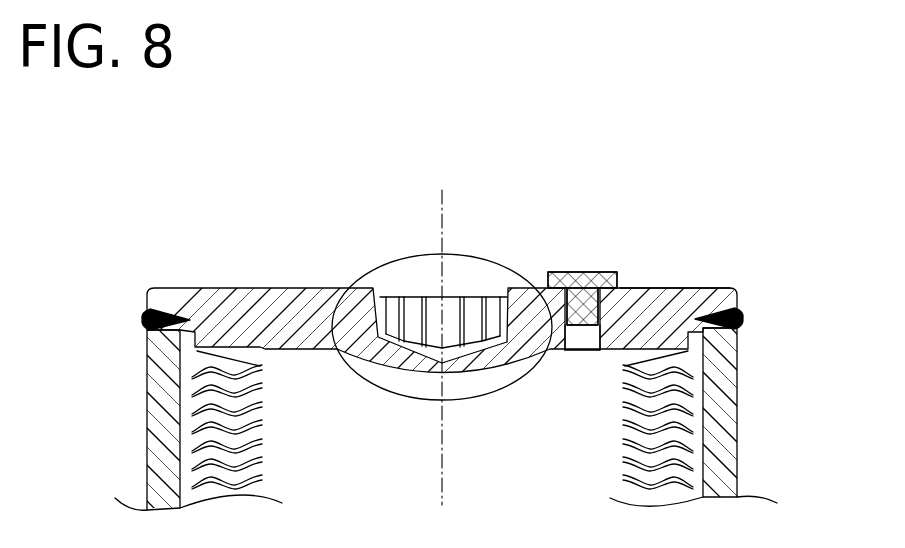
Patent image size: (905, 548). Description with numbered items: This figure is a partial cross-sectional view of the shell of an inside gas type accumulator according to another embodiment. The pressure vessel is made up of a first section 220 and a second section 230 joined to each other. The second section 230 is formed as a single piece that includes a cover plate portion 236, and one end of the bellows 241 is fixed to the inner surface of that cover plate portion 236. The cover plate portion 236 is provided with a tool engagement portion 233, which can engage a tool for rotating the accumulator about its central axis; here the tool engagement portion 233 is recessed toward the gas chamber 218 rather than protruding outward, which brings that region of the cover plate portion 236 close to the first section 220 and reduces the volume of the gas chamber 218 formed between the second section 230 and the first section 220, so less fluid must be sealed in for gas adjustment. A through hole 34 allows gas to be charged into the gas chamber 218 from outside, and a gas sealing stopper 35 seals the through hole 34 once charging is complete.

The gas chamber 218 is at (317, 395).
The second section 230 is at (747, 290).
The tool engagement portion 233 is at (476, 284).
The gas sealing stopper 35 is at (582, 271).
The through hole 34 is at (585, 352).
The cover plate portion 236 is at (692, 286).
The first section 220 is at (738, 413).
The bellows 241 is at (623, 461).